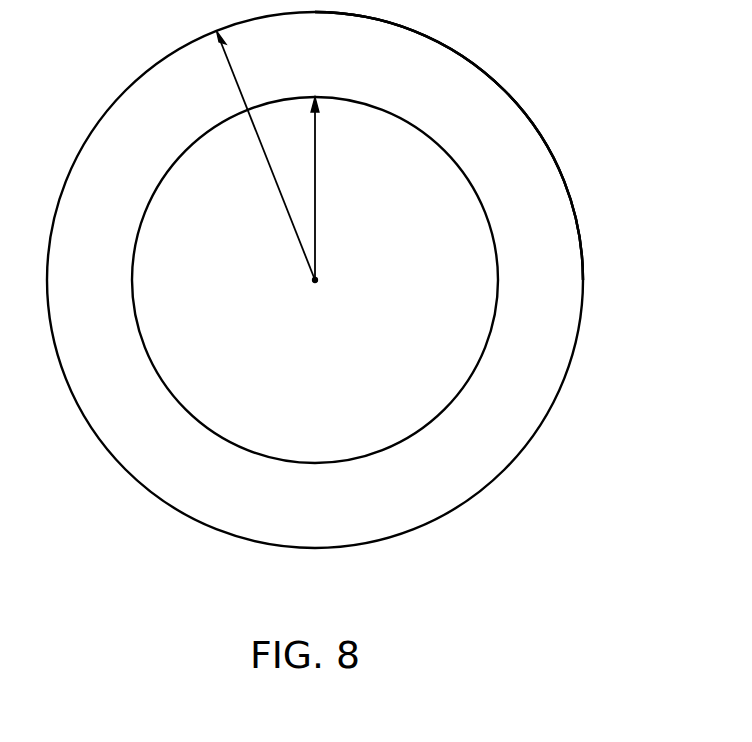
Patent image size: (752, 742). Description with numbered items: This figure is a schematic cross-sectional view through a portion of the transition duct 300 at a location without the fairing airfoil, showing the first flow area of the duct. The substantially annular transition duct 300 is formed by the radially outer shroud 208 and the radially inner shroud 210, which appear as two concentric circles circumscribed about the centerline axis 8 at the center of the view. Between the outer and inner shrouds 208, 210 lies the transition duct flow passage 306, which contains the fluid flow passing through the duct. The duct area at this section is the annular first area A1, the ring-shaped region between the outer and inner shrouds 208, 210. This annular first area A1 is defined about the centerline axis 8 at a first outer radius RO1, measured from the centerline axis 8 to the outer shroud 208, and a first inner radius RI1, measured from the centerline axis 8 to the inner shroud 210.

The transition duct 300 is at (349, 322).
The radially outer shroud 208 is at (520, 103).
The radially inner shroud 210 is at (254, 453).
The transition duct flow passage 306 is at (528, 434).
The annular first area A1 is at (553, 213).
The first outer radius RO1 is at (229, 60).
The first inner radius RI1 is at (317, 183).
The centerline axis 8 is at (318, 283).